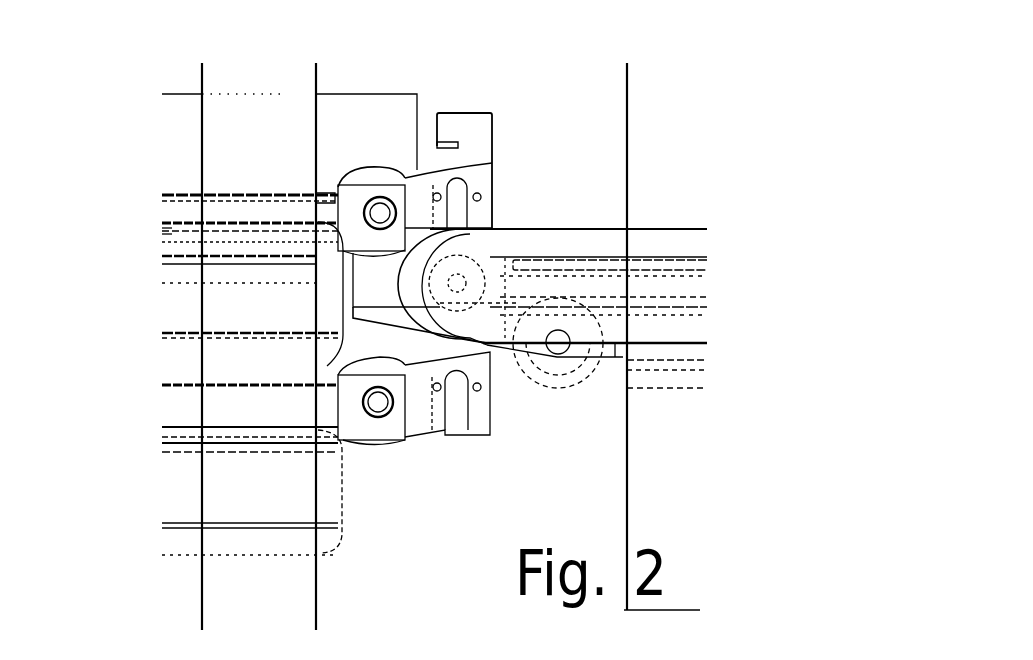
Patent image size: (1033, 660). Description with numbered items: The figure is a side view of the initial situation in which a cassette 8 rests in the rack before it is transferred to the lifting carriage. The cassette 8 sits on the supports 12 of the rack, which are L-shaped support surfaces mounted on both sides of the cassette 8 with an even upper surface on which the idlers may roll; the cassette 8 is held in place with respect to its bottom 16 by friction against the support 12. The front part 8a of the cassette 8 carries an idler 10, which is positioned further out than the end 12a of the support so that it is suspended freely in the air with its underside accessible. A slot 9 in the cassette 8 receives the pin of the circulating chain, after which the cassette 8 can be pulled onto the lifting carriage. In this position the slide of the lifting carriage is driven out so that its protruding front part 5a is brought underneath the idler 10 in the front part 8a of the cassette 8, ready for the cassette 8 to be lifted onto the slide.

The front part of the slide 5a is at (404, 322).
The cassette 8 is at (375, 135).
The front part of the cassette 8a is at (423, 98).
The slot 9 is at (467, 188).
The idler 10 is at (365, 168).
The support 12 is at (163, 250).
The end of the support 12a is at (323, 256).
The bottom of the cassette 16 is at (358, 250).